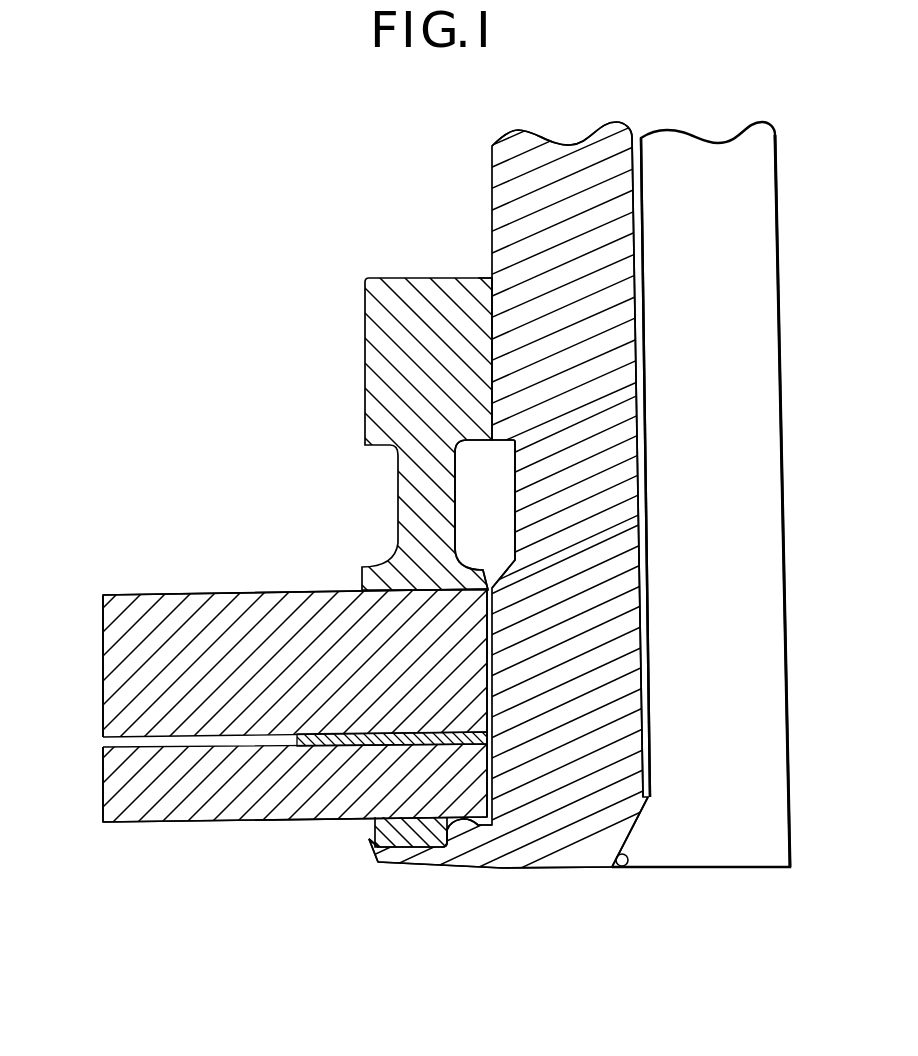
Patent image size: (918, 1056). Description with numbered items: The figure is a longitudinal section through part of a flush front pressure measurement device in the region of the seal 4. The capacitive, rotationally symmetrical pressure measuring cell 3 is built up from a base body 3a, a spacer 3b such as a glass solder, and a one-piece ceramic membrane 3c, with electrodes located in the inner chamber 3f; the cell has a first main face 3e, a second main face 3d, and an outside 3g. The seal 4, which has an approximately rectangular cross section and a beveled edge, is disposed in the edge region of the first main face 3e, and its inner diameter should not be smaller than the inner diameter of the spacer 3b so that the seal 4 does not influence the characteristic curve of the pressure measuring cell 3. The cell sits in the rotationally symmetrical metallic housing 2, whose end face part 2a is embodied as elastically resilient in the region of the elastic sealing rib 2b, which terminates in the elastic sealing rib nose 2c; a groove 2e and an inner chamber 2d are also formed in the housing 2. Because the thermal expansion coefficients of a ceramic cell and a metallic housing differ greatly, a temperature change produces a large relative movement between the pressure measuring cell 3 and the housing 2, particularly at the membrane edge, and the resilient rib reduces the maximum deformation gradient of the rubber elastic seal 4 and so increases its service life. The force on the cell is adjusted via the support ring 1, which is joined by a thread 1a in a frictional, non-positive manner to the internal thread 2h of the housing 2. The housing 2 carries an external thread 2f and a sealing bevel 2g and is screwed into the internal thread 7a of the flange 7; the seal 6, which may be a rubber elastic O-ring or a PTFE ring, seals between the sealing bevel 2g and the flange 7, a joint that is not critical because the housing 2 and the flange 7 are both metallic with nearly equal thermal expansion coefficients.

The support ring 1 is at (365, 325).
The thread 1a is at (478, 285).
The housing 2 is at (610, 590).
The end face part of the housing 2a is at (563, 868).
The elastic sealing rib 2b is at (400, 868).
The elastic sealing rib nose 2c is at (373, 835).
The inner chamber 2d is at (483, 500).
The groove 2e is at (438, 850).
The external thread 2f is at (643, 291).
The sealing bevel 2g is at (643, 822).
The internal thread 2h is at (492, 195).
The pressure measuring cell 3 is at (165, 603).
The base body 3a is at (103, 617).
The spacer 3b is at (320, 737).
The membrane 3c is at (103, 806).
The second main face 3d is at (218, 593).
The first main face 3e is at (180, 822).
The inner chamber 3f is at (103, 742).
The outside 3g is at (495, 760).
The seal 4 is at (370, 828).
The seal 6 is at (623, 867).
The flange 7 is at (677, 131).
The internal thread 7a is at (643, 212).